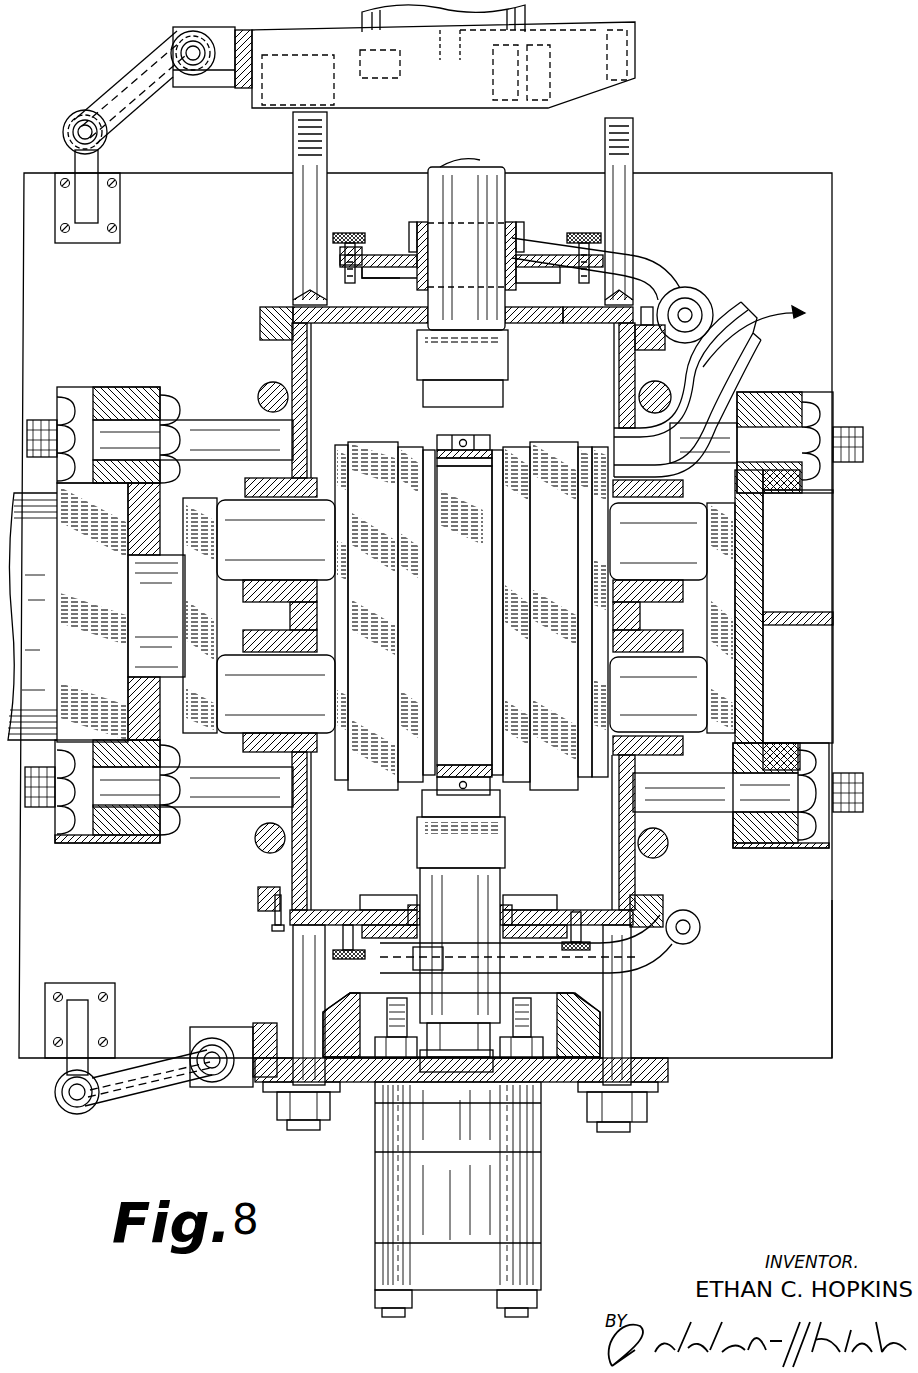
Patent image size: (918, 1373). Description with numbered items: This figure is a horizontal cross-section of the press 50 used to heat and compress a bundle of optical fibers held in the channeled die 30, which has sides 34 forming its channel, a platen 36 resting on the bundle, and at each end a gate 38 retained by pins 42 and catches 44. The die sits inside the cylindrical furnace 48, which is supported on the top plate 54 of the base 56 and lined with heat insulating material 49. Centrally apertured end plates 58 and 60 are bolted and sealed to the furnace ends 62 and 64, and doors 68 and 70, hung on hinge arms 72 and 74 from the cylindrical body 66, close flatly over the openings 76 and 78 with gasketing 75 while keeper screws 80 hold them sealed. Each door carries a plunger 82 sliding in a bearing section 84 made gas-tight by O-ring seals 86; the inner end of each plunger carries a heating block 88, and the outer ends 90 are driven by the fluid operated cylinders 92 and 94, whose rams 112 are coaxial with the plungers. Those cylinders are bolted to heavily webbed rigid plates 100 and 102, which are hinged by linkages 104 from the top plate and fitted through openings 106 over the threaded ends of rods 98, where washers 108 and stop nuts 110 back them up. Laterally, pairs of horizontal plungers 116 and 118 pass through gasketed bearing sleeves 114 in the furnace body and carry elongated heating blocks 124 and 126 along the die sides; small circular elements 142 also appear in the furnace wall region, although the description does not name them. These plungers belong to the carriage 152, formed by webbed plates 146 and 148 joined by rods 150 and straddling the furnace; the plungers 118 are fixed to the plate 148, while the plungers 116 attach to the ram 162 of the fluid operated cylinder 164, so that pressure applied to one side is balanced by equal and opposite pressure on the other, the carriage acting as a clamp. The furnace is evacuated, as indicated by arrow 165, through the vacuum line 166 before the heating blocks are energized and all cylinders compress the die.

The channeled die 30 is at (463, 615).
The sides 34 is at (400, 600).
The platen 36 is at (405, 690).
The gate 38 is at (455, 435).
The pins 42 is at (468, 462).
The catches 44 is at (500, 438).
The furnace 48 is at (258, 312).
The heat insulating material 49 is at (615, 410).
The press 50 is at (786, 170).
The top plate 54 is at (143, 180).
The base 56 is at (838, 995).
The end plate 58 is at (595, 910).
The end plate 60 is at (608, 323).
The end of furnace 62 is at (335, 893).
The end of furnace 64 is at (325, 323).
The cylindrical body 66 is at (275, 890).
The door 68 is at (398, 910).
The door 70 is at (362, 278).
The hinge arm 72 is at (680, 940).
The hinge arm 74 is at (650, 268).
The gasketing 75 is at (555, 275).
The opening 76 is at (550, 895).
The opening 78 is at (540, 323).
The keeper screws 80 is at (348, 233).
The plunger 82 is at (505, 180).
The bearing section 84 is at (415, 215).
The O-ring seals 86 is at (417, 250).
The heating blocks 88 is at (415, 383).
The ends of plungers 90 is at (470, 160).
The fluid operated cylinder 92 is at (541, 1208).
The fluid operated cylinder 94 is at (548, 45).
The rod 98 is at (295, 132).
The rigid plate 100 is at (372, 1082).
The rigid plate 102 is at (640, 72).
The linkages 104 is at (130, 62).
The openings 106 is at (676, 1070).
The washers 108 is at (278, 1100).
The stop nuts 110 is at (280, 1132).
The ram 112 is at (480, 95).
The bearing sleeves 114 is at (245, 490).
The horizontal plungers 116 is at (232, 575).
The horizontal plungers 118 is at (695, 575).
The heating block 124 is at (352, 790).
The heating block 126 is at (580, 790).
The locating pin 142 is at (285, 390).
The webbed plate 146 is at (105, 387).
The webbed plate 148 is at (790, 392).
The rods 150 is at (42, 420).
The carriage 152 is at (222, 418).
The ram 162 is at (121, 612).
The fluid operated cylinder 164 is at (32, 616).
The arrow 165 is at (772, 318).
The vacuum line 166 is at (738, 312).